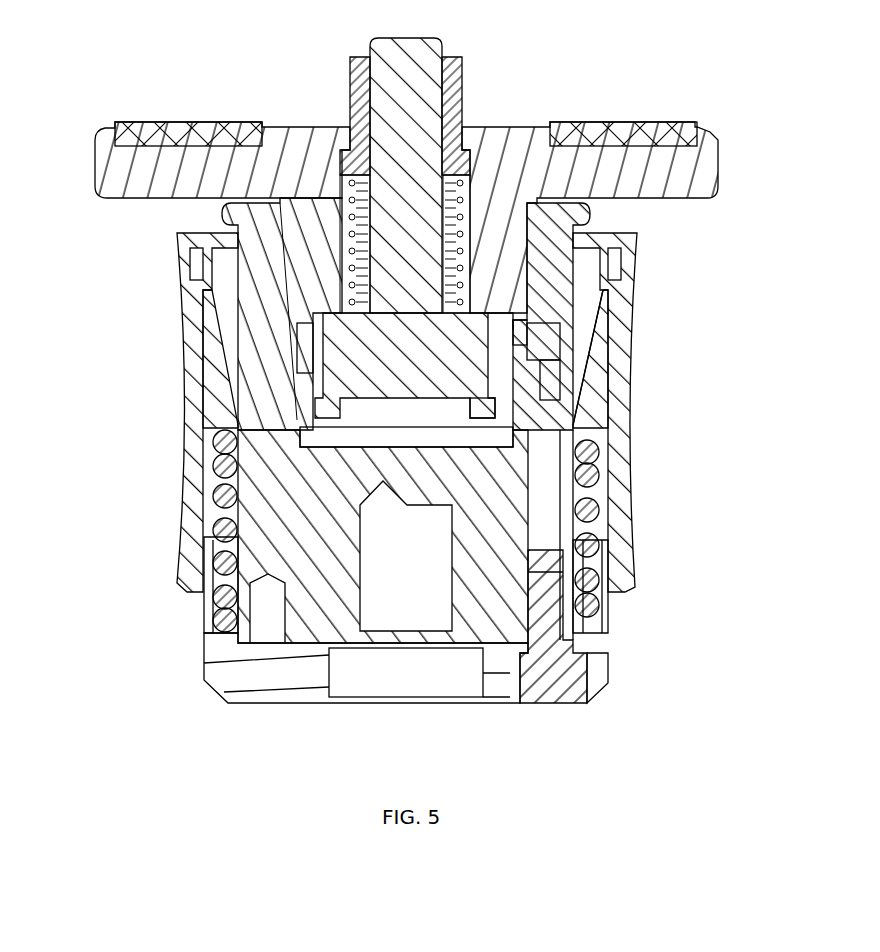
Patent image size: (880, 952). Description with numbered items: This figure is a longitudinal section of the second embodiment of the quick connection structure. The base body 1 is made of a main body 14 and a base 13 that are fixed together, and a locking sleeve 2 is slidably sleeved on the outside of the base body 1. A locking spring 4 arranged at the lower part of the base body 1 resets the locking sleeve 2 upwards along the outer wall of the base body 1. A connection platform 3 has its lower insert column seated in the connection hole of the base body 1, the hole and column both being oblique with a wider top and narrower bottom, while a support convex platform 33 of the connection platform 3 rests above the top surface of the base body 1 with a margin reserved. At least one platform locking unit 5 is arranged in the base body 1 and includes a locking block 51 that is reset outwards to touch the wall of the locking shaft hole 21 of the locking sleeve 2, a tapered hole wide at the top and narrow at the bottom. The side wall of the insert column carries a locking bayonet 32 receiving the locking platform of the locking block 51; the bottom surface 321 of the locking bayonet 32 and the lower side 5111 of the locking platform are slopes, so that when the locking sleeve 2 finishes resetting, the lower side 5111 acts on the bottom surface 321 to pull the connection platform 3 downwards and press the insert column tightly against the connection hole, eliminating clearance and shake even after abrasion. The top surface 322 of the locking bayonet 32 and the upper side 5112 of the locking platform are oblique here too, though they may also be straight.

The base body 1 is at (493, 500).
The locking sleeve 2 is at (197, 330).
The locking shaft hole 21 is at (618, 332).
The connection platform 3 is at (630, 165).
The support convex platform 33 is at (180, 165).
The locking bayonet 32 is at (300, 367).
The bottom surface 321 is at (505, 382).
The top surface 322 is at (509, 318).
The platform locking unit 5 is at (580, 382).
The locking block 51 is at (580, 352).
The lower side 5111 is at (522, 378).
The upper side 5112 is at (516, 338).
The locking spring 4 is at (595, 483).
The main body 14 is at (258, 548).
The base 13 is at (240, 672).